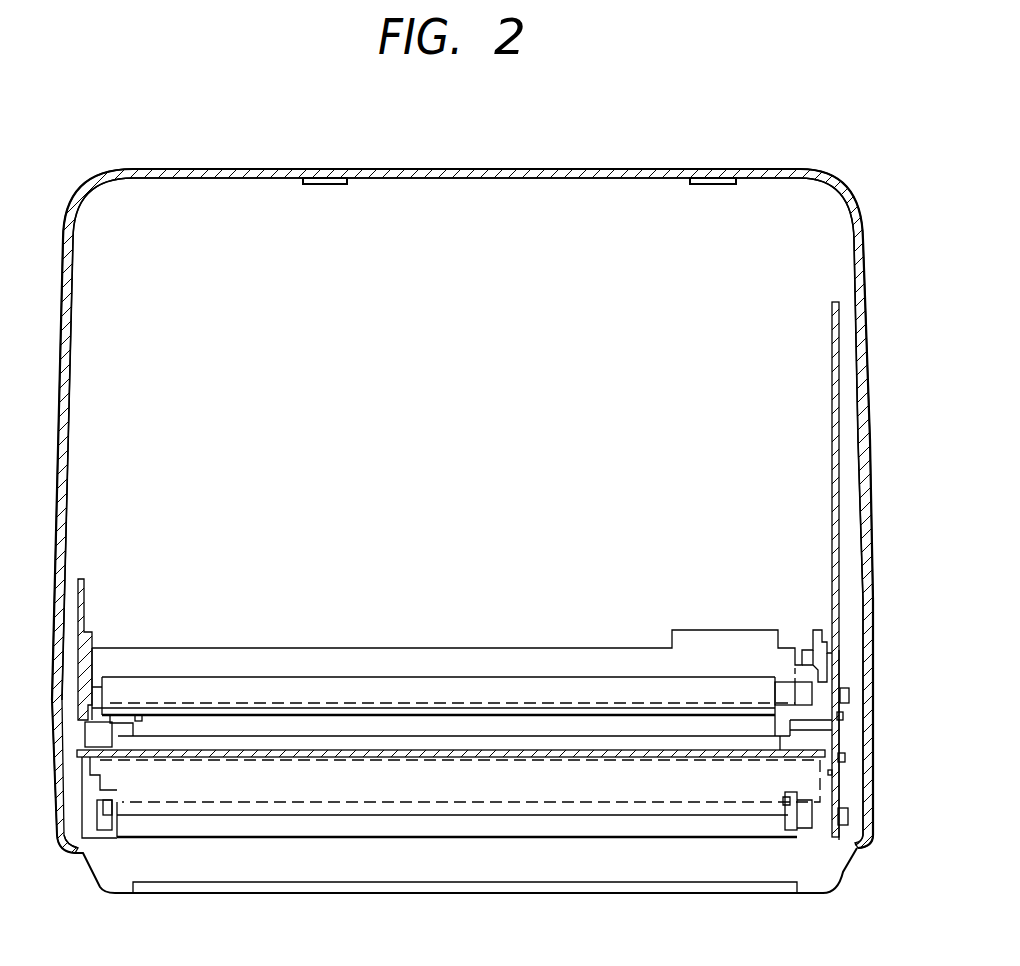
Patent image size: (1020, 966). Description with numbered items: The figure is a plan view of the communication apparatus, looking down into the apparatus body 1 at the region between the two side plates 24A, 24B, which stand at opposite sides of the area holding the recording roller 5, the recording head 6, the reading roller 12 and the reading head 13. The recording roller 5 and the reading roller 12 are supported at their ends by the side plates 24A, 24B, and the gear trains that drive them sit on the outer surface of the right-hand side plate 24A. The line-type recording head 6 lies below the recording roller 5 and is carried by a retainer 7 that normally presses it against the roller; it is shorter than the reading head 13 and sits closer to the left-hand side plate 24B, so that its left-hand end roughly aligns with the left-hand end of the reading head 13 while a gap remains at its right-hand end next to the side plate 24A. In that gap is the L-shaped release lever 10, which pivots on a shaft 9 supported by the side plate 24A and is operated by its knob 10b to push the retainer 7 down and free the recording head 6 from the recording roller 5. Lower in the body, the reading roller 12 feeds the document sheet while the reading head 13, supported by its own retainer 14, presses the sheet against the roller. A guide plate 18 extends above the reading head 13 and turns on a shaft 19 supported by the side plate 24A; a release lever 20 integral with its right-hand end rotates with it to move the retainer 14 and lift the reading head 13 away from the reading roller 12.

The apparatus body 1 is at (836, 196).
The side plate 24A is at (831, 390).
The side plate 24B is at (84, 596).
The recording roller 5 is at (765, 688).
The recording head 6 is at (790, 676).
The retainer 7 is at (798, 665).
The shaft 9 is at (842, 716).
The release lever 10 is at (823, 683).
The knob 10b is at (818, 660).
The reading roller 12 is at (695, 828).
The reading head 13 is at (466, 803).
The retainer 14 is at (820, 740).
The guide plate 18 is at (598, 810).
The shaft 19 is at (848, 762).
The release lever 20 is at (812, 817).